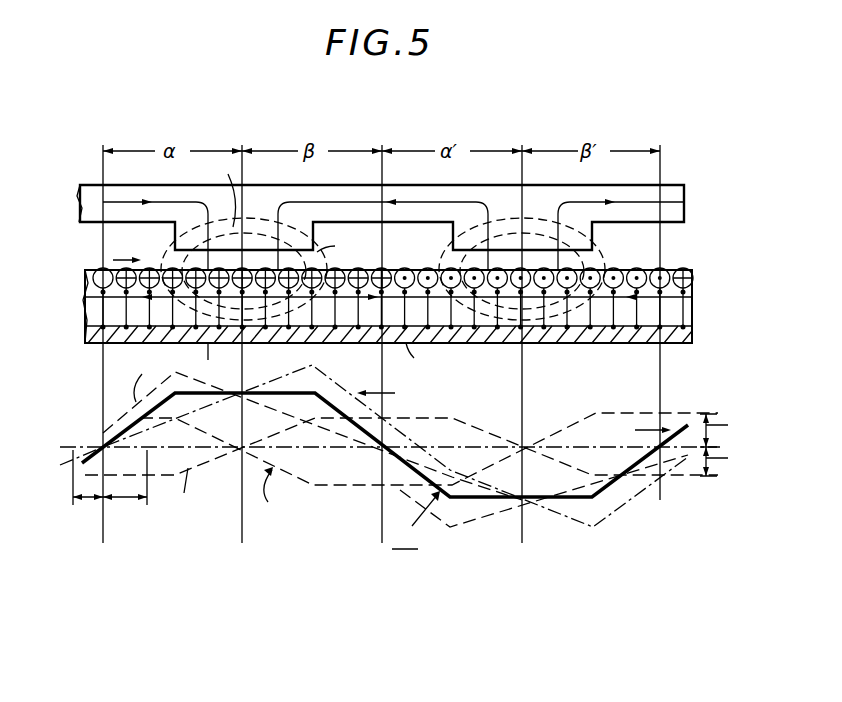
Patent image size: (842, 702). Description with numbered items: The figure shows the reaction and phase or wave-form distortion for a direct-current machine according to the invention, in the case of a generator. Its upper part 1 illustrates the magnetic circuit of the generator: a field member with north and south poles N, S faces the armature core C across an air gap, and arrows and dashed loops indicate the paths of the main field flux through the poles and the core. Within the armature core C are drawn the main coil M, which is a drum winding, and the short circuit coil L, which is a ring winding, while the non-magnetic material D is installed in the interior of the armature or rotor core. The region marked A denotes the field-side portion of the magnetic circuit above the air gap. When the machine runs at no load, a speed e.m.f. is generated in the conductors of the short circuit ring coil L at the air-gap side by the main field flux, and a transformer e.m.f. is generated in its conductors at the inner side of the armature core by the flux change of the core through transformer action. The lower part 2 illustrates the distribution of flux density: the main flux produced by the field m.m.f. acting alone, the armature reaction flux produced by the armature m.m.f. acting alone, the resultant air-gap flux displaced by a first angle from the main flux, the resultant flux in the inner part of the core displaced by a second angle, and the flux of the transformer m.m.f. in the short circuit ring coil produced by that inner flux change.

The magnetic circuit 1 is at (377, 273).
The flux density distribution 2 is at (404, 446).
The armature core A is at (470, 193).
The north magnetic pole N is at (244, 255).
The south magnetic pole S is at (522, 255).
The main coil M is at (387, 268).
The armature core C is at (628, 268).
The short circuit coil L is at (545, 296).
The non-magnetic material D is at (621, 343).